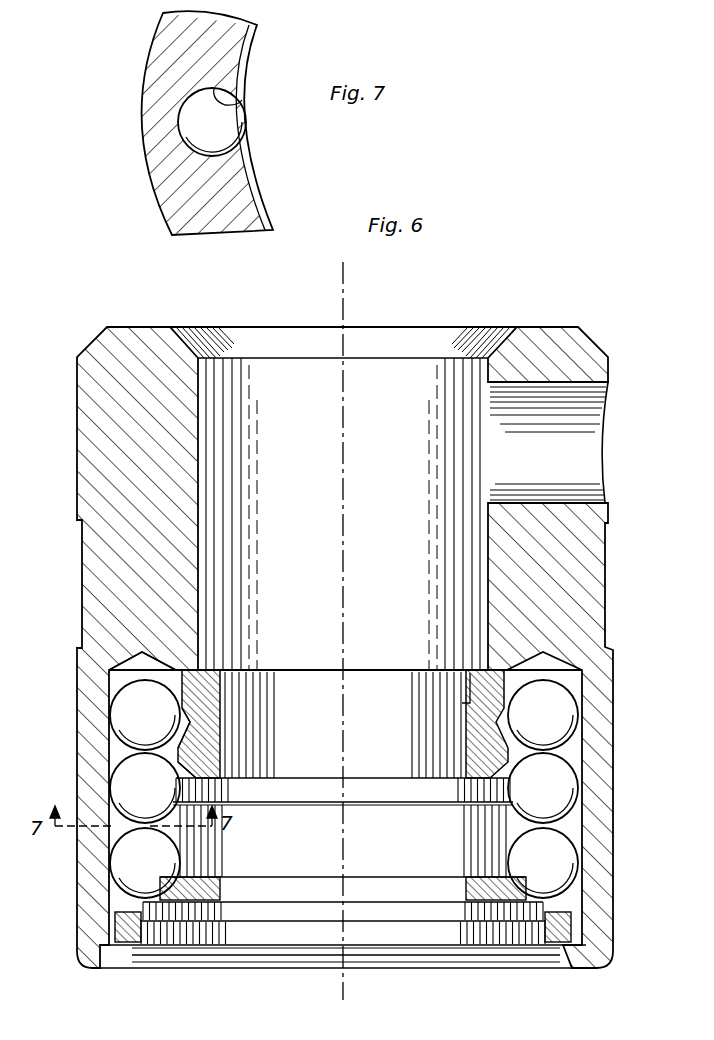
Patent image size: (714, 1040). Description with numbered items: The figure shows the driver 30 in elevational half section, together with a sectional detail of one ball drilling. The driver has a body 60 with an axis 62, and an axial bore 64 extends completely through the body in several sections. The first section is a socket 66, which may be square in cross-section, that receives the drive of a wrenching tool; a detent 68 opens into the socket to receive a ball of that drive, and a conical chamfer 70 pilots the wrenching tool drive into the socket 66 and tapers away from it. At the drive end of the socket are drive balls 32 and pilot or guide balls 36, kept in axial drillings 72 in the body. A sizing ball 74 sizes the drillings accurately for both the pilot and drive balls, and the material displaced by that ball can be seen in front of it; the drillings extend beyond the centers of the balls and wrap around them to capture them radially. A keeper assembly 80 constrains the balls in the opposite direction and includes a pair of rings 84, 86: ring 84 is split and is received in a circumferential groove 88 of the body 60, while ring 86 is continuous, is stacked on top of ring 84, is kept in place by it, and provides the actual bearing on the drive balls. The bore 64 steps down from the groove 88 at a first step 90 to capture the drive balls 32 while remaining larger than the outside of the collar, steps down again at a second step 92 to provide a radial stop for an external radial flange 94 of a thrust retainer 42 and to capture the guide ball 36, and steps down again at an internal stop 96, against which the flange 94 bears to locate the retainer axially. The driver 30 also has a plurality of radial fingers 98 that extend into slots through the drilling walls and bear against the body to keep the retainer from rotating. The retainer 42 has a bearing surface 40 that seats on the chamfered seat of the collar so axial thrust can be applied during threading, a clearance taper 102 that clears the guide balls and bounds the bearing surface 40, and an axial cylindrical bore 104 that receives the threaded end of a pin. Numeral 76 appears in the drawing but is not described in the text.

In FIG. 6, the driver 30 is at (615, 597).
In FIG. 6, the drive balls 32 is at (217, 889).
In FIG. 7, the guide ball 36 is at (246, 128).
In FIG. 6, the guide ball 36 is at (530, 807).
In FIG. 6, the bearing surface 40 is at (214, 791).
In FIG. 6, the thrust retainer 42 is at (212, 675).
In FIG. 7, the body 60 is at (145, 136).
In FIG. 6, the body 60 is at (600, 548).
In FIG. 6, the axis 62 is at (347, 298).
In FIG. 6, the axial bore 64 is at (400, 849).
In FIG. 6, the socket 66 is at (408, 470).
In FIG. 6, the detent 68 is at (548, 386).
In FIG. 6, the conical chamfer 70 is at (480, 323).
In FIG. 7, the axial drillings 72 is at (240, 100).
In FIG. 6, the axial drillings 72 is at (150, 826).
In FIG. 6, the sizing ball 74 is at (125, 720).
In FIG. 6, the retaining lip 76 is at (113, 706).
In FIG. 6, the keeper assembly 80 is at (257, 935).
In FIG. 6, the ring 84 is at (458, 930).
In FIG. 6, the ring 86 is at (462, 900).
In FIG. 6, the circumferential groove 88 is at (138, 957).
In FIG. 6, the step 90 is at (170, 833).
In FIG. 7, the step 92 is at (246, 170).
In FIG. 6, the step 92 is at (196, 766).
In FIG. 6, the external radial flange 94 is at (200, 758).
In FIG. 6, the internal stop 96 is at (192, 722).
In FIG. 6, the radial fingers 98 is at (176, 676).
In FIG. 6, the clearance taper 102 is at (512, 772).
In FIG. 6, the axial cylindrical bore 104 is at (467, 702).